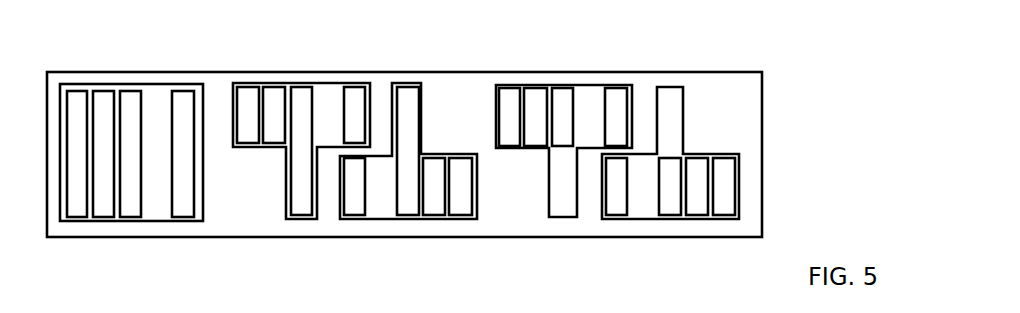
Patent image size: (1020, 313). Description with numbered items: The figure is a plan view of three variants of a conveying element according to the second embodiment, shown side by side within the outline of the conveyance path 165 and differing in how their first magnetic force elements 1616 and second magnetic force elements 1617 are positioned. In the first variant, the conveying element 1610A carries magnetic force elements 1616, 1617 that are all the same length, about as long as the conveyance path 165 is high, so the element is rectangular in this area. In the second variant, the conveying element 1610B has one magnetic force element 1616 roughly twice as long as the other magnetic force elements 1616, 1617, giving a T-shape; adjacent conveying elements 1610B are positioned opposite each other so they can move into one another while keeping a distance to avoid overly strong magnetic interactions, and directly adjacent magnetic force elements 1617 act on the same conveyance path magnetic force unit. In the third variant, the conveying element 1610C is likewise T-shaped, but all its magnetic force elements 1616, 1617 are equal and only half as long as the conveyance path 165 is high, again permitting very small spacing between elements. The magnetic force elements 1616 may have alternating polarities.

The conveyance path 165 is at (220, 223).
The conveying element 1610A is at (85, 85).
The conveying element 1610B is at (298, 219).
The conveying element 1610C is at (570, 219).
The first magnetic force element 1616 is at (245, 97).
The second magnetic force element 1617 is at (183, 97).